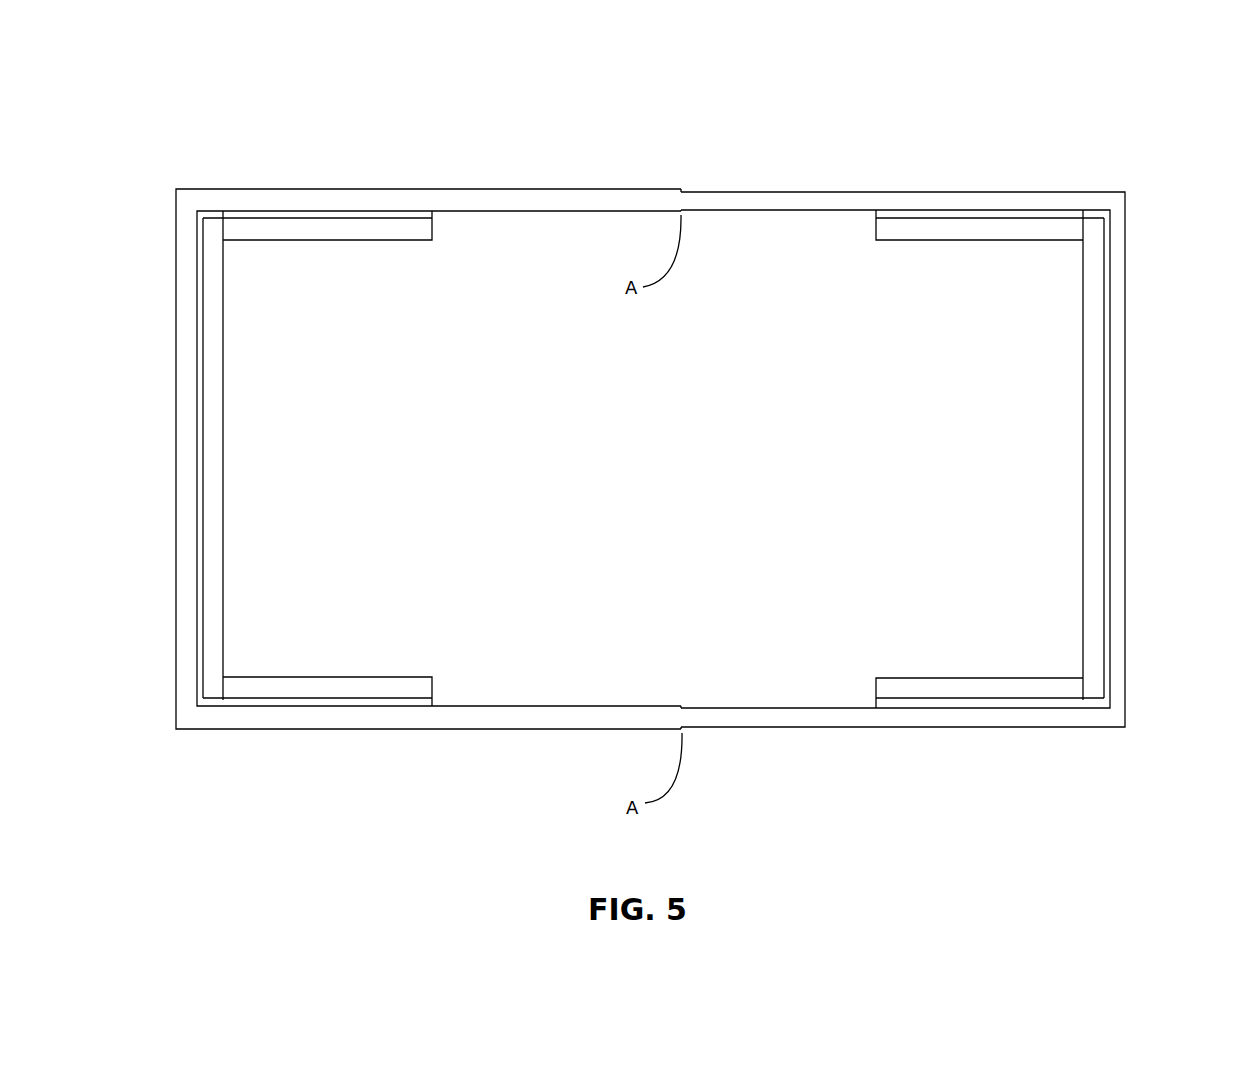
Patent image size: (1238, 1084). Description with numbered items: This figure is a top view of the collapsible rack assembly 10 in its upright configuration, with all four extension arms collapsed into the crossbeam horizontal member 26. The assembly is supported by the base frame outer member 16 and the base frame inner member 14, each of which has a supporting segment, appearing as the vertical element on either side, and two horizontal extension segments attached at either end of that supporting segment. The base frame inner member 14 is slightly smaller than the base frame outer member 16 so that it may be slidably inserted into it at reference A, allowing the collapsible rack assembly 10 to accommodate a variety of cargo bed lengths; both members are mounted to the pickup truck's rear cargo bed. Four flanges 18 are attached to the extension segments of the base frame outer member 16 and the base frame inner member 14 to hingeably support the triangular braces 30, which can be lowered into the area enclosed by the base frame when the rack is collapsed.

The collapsible rack assembly 10 is at (155, 175).
The base frame inner member 14 is at (1118, 482).
The base frame outer member 16 is at (185, 481).
The flanges 18 is at (432, 213).
The crossbeam horizontal member 26 is at (213, 502).
The triangular braces 30 is at (318, 235).